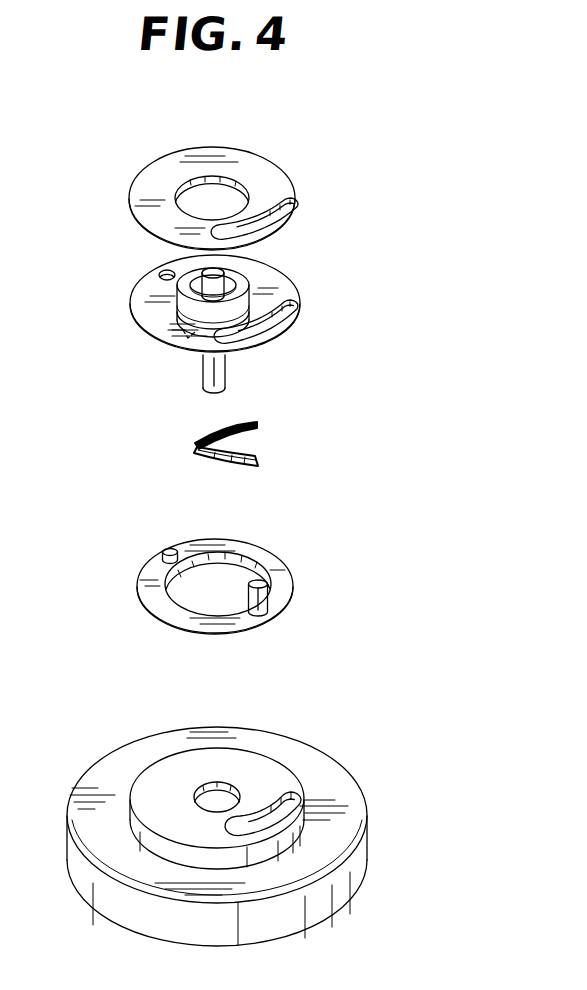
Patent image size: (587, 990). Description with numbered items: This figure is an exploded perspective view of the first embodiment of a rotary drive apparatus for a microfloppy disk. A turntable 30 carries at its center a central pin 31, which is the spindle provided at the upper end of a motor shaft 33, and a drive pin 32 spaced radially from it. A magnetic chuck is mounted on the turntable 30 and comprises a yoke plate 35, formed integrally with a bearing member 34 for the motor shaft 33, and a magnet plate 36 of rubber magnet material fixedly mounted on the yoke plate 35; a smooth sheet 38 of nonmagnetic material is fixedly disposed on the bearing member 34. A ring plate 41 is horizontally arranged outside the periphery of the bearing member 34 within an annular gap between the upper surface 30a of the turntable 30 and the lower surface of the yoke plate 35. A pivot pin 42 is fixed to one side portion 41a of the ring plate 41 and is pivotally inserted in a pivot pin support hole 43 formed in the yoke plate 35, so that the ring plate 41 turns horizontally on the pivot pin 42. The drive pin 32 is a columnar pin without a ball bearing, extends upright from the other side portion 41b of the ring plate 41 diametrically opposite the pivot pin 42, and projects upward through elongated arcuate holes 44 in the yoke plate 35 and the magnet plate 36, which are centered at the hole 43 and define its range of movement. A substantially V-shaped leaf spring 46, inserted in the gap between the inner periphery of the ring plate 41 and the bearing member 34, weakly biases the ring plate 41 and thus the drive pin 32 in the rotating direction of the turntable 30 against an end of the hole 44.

The turntable 30 is at (256, 832).
The upper surface of the turntable 30a is at (178, 768).
The central pin 31 is at (196, 289).
The drive pin 32 is at (268, 602).
The motor shaft 33 is at (225, 378).
The bearing member 34 is at (184, 338).
The yoke plate 35 is at (152, 319).
The magnet plate 36 is at (245, 166).
The smooth sheet 38 is at (240, 287).
The ring plate 41 is at (207, 563).
The one side portion of the ring plate 41a is at (148, 573).
The other side portion of the ring plate 41b is at (278, 593).
The pivot pin 42 is at (166, 550).
The pivot pin support hole 43 is at (160, 272).
The elongated arcuate holes 44 is at (292, 206).
The spring 46 is at (216, 431).